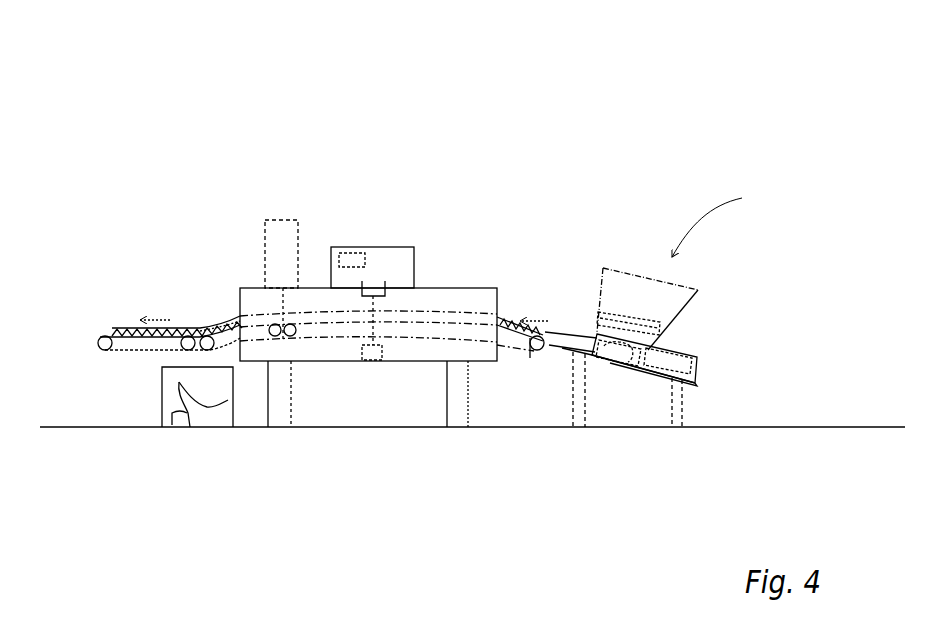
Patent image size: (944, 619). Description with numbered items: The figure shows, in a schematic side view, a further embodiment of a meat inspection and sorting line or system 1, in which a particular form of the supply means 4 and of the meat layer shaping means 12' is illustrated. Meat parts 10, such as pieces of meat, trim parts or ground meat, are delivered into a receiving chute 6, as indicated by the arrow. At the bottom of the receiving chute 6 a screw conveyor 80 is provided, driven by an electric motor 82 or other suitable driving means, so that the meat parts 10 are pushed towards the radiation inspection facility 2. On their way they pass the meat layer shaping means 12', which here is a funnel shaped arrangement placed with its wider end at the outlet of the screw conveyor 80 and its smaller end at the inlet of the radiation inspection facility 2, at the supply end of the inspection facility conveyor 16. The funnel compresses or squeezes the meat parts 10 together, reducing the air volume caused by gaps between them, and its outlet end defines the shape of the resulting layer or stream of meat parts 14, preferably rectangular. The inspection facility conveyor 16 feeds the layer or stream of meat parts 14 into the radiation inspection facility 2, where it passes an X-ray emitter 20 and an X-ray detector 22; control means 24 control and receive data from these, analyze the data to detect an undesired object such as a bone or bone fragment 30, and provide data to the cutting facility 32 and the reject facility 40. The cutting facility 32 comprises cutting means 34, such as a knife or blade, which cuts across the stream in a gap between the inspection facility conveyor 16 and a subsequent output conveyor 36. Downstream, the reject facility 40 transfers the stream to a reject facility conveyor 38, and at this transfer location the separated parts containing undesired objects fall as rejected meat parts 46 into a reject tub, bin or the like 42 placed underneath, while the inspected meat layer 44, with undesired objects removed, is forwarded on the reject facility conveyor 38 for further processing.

The system 1 is at (523, 158).
The radiation inspection facility 2 is at (443, 288).
The supply means 4 is at (650, 233).
The receiving chute 6 is at (698, 291).
The meat parts 10 is at (623, 318).
The meat layer shaping means 12' is at (571, 272).
The layer or stream of meat parts 14 is at (508, 327).
The inspection facility conveyor 16 is at (523, 350).
The X-ray emitter 20 is at (385, 248).
The X-ray detector 22 is at (385, 352).
The control means 24 is at (373, 281).
The bone or bone fragment 30 is at (332, 313).
The cutting facility 32 is at (240, 262).
The cutting means 34 is at (283, 292).
The output conveyor 36 is at (260, 363).
The reject facility conveyor 38 is at (113, 351).
The reject facility 40 is at (185, 303).
The reject tub, bin or the like 42 is at (162, 385).
The inspected meat layer 44 is at (130, 327).
The rejected meat parts 46 is at (187, 408).
The screw conveyor 80 is at (640, 358).
The electric motor 82 is at (672, 378).